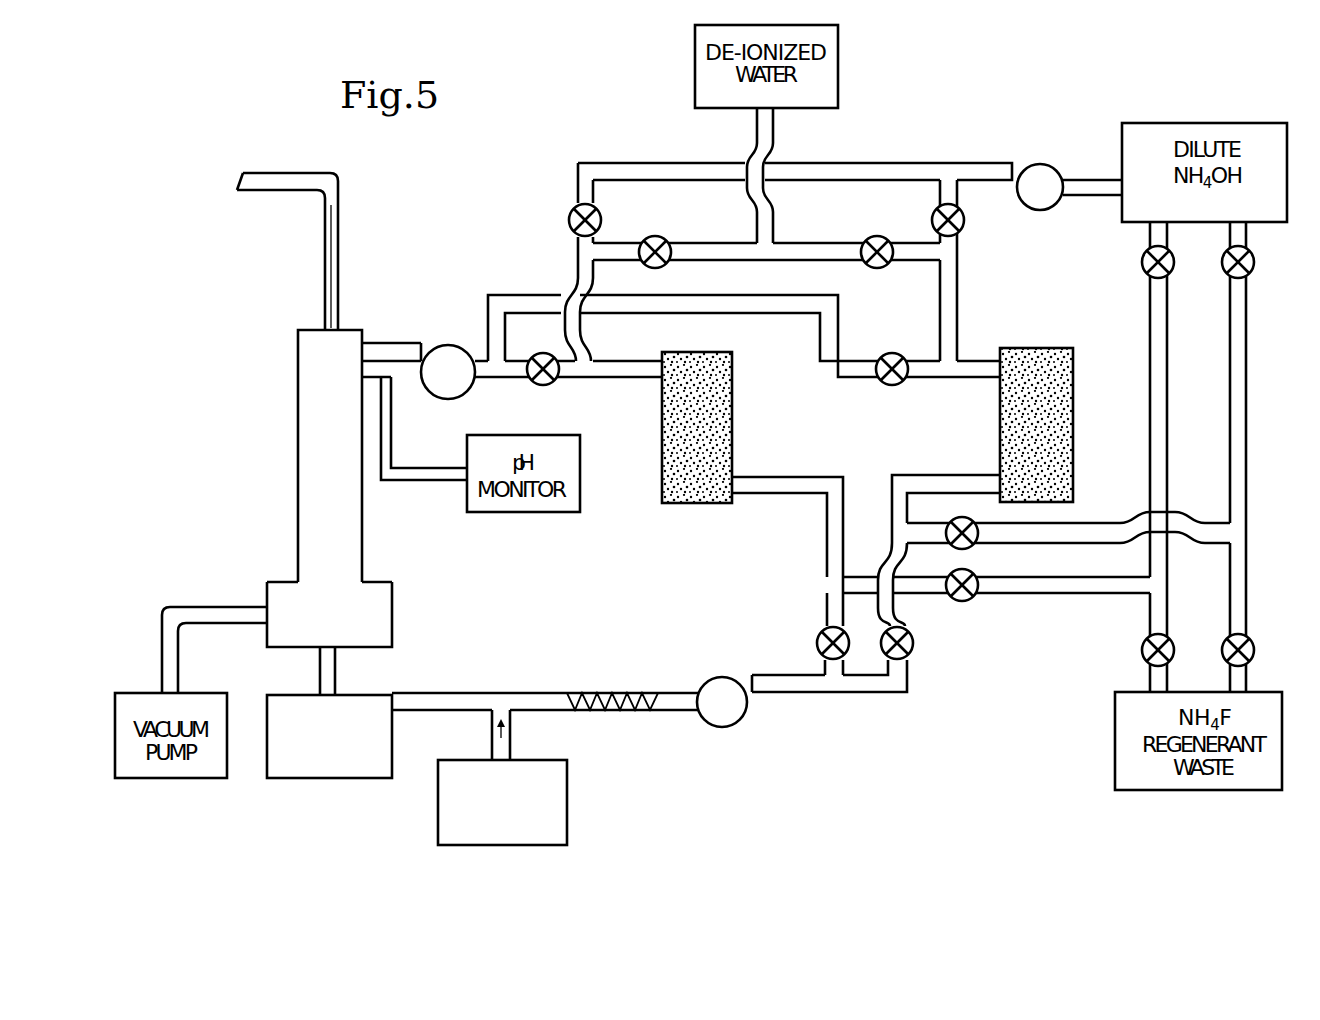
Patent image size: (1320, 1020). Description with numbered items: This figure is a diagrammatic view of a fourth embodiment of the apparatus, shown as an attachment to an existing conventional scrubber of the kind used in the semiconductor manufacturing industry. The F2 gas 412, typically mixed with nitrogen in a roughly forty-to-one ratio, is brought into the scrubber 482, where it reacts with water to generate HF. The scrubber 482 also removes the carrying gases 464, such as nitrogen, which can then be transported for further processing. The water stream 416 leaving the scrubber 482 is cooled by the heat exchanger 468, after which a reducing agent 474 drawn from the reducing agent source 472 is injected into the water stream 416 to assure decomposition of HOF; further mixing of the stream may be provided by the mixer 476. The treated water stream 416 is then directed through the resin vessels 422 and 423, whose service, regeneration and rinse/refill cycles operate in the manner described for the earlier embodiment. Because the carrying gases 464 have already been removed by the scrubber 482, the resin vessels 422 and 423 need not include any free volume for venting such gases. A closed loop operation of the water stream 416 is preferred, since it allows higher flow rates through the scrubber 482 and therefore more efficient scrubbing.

The F2 gas 412 is at (215, 607).
The water stream 416 is at (335, 665).
The resin vessel 422 is at (732, 415).
The resin vessel 423 is at (1038, 348).
The carrying gases 464 is at (336, 213).
The heat exchanger 468 is at (310, 784).
The reducing agent source 472 is at (567, 803).
The reducing agent 474 is at (510, 735).
The mixer 476 is at (602, 690).
The scrubber 482 is at (392, 598).